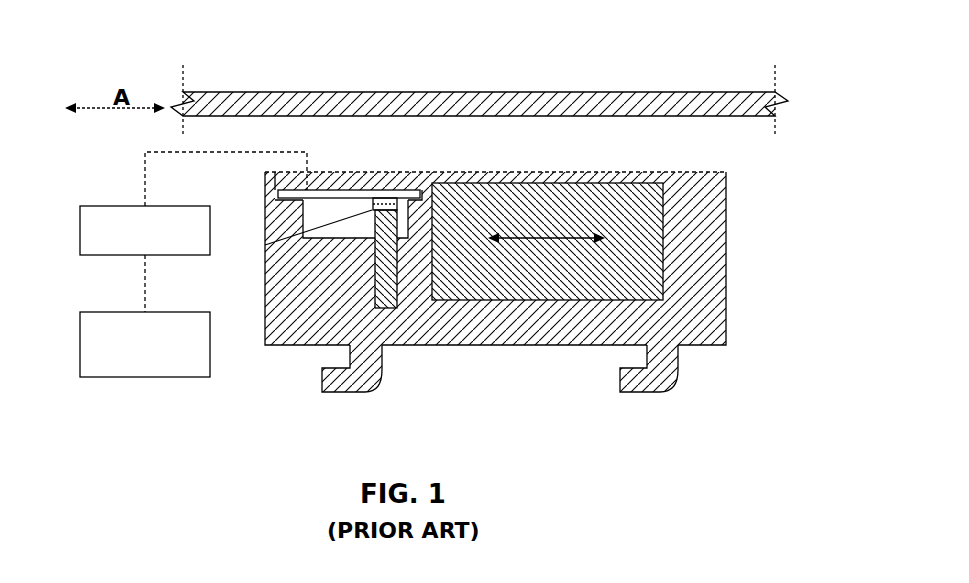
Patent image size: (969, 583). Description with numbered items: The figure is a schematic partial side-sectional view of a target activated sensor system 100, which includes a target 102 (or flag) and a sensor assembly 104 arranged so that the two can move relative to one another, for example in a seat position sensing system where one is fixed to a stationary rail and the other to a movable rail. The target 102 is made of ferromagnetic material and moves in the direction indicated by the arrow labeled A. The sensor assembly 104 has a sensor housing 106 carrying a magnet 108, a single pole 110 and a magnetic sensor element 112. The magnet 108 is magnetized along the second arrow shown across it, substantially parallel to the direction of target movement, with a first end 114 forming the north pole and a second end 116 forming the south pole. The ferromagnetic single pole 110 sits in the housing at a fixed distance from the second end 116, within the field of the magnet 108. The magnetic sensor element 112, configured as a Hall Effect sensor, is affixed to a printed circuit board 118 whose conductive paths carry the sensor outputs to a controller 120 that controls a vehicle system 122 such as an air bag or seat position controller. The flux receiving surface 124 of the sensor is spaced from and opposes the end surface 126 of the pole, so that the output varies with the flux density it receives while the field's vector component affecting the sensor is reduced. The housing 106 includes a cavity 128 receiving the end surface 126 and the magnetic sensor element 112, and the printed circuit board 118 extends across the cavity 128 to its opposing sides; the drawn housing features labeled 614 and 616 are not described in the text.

The target activated sensor system 100 is at (111, 46).
The target 102 is at (340, 92).
The sensor assembly 104 is at (752, 231).
The sensor housing 106 is at (720, 292).
The magnet 108 is at (616, 183).
The single pole 110 is at (388, 310).
The magnetic sensor element 112 is at (388, 198).
The first end 114 is at (673, 293).
The second end 116 is at (420, 290).
The printed circuit board 118 is at (327, 190).
The controller 120 is at (110, 206).
The vehicle system 122 is at (110, 312).
The flux receiving surface 124 is at (265, 245).
The end surface 126 is at (398, 213).
The cavity 128 is at (316, 222).
The left mounting foot 614 is at (330, 393).
The right mounting foot 616 is at (638, 393).